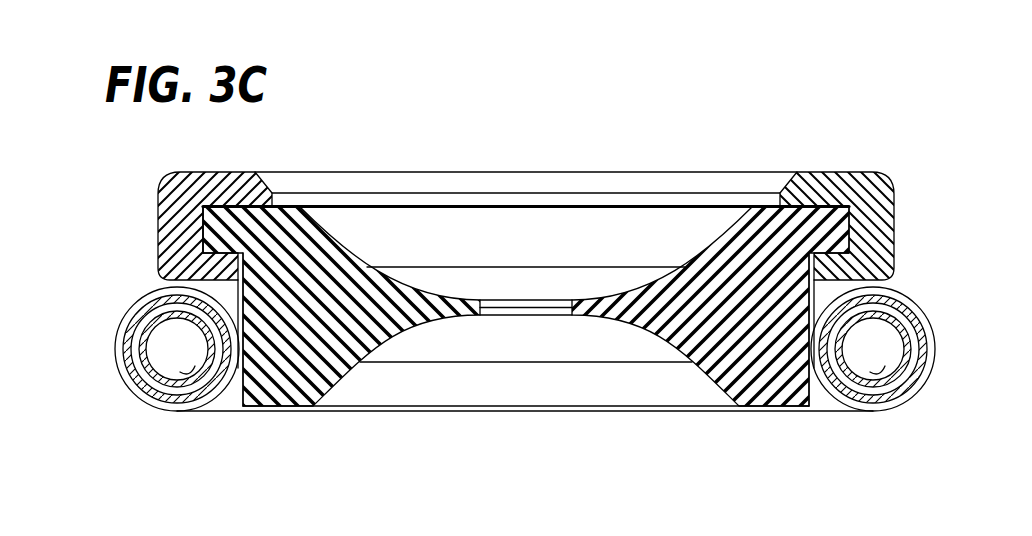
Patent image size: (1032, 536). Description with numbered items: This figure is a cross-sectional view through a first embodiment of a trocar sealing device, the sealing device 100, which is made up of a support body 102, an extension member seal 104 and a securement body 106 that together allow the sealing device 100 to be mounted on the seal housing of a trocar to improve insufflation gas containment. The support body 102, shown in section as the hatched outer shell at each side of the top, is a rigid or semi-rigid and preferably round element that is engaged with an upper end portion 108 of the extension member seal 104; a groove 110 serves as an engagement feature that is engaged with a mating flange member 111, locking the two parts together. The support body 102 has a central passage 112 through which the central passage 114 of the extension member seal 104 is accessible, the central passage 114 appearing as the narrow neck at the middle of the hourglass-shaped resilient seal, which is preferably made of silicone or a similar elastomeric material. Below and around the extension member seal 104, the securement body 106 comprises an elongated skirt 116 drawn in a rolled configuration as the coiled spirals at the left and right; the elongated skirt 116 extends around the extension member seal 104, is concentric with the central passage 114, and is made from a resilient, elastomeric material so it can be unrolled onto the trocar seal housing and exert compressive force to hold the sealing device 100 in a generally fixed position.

The sealing device 100 is at (489, 118).
The support body 102 is at (847, 178).
The extension member seal 104 is at (723, 345).
The securement body 106 is at (121, 355).
The upper end portion 108 is at (272, 228).
The groove 110 is at (208, 173).
The flange member 111 is at (213, 222).
The central passage 112 is at (714, 165).
The central passage 114 is at (532, 278).
The elongated skirt 116 is at (128, 388).